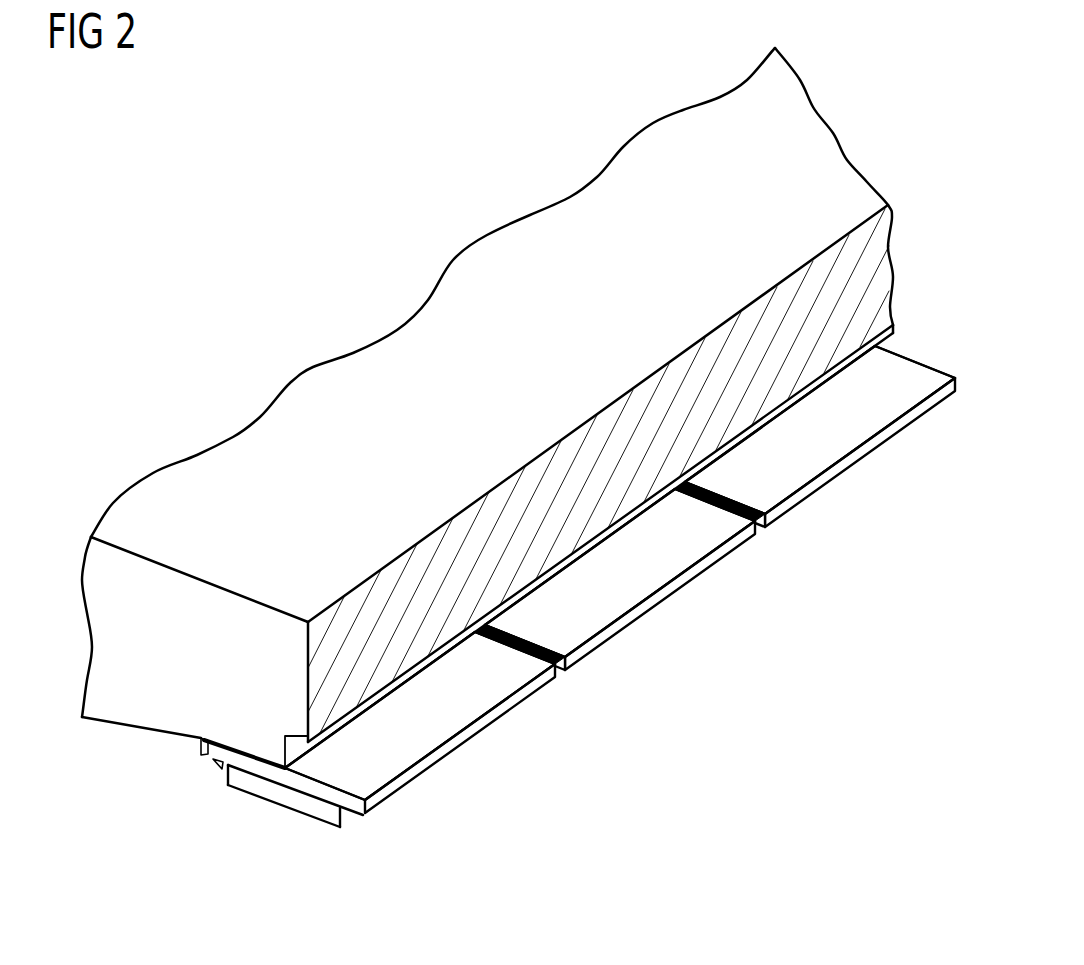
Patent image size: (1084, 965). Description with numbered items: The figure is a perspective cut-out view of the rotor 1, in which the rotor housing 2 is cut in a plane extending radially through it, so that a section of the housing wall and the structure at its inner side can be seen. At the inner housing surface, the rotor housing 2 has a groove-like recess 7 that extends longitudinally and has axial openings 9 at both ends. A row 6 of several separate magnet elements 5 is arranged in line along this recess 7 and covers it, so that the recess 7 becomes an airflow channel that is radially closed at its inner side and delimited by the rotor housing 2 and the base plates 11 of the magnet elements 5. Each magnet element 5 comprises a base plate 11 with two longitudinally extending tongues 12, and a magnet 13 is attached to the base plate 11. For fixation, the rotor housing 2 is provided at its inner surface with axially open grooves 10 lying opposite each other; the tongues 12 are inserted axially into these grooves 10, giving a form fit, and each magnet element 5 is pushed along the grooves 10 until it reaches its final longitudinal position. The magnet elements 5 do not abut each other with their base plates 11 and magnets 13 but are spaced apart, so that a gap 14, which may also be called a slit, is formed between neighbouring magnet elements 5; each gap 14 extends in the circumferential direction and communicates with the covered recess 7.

The rotor 1 is at (918, 244).
The rotor housing 2 is at (157, 503).
The magnet element 5 is at (485, 754).
The row 6 is at (264, 863).
The groove-like recess 7 is at (292, 745).
The axial opening 9 is at (311, 770).
The groove 10 is at (200, 747).
The base plate 11 is at (410, 752).
The tongue 12 is at (213, 766).
The magnet 13 is at (353, 820).
The gap 14 is at (555, 677).